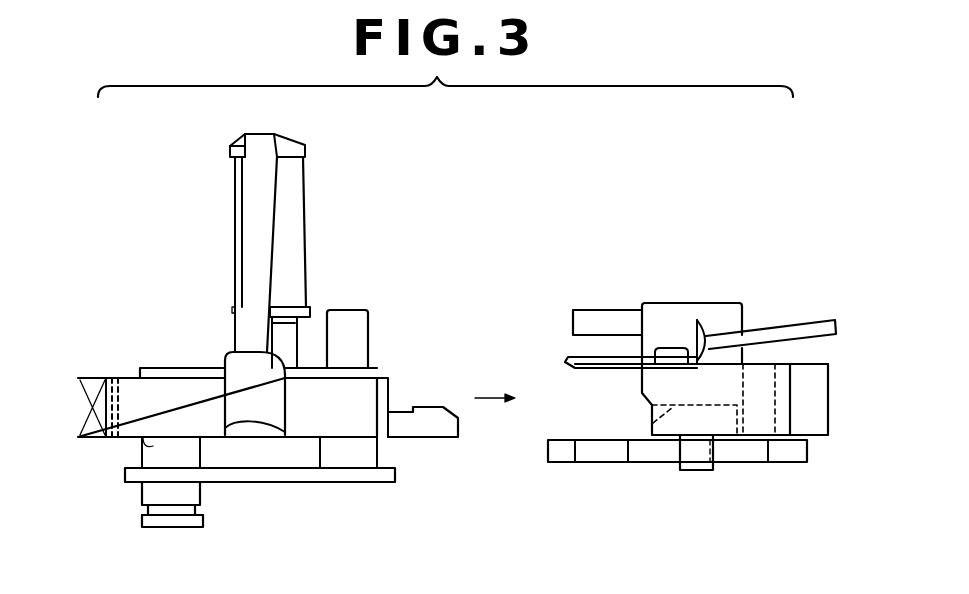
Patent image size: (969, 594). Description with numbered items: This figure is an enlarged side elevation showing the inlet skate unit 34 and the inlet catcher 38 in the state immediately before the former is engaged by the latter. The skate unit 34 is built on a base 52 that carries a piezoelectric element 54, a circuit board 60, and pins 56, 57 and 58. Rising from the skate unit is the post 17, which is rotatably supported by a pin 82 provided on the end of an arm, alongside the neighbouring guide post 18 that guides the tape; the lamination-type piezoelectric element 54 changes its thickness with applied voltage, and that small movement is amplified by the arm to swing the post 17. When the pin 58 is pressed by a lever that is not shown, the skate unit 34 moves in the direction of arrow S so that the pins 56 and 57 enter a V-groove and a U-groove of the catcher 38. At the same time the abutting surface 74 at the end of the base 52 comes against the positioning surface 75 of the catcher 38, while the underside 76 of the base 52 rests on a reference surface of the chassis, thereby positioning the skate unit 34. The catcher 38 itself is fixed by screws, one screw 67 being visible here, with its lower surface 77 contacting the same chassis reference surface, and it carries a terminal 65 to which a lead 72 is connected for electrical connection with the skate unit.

The post 17 is at (293, 200).
The guide post 18 is at (250, 217).
The inlet skate unit 34 is at (374, 173).
The inlet catcher 38 is at (679, 221).
The base 52 is at (163, 387).
The piezoelectric element 54 is at (78, 403).
The pin 56 is at (363, 327).
The pin 57 is at (377, 450).
The pin 58 is at (152, 490).
The circuit board 60 is at (193, 368).
The terminal 65 is at (567, 355).
The screw 67 is at (673, 348).
The lead 72 is at (797, 327).
The abutting surface 74 is at (430, 405).
The positioning surface 75 is at (653, 420).
The underside 76 is at (147, 447).
The lower surface 77 is at (813, 437).
The pin 82 is at (292, 343).